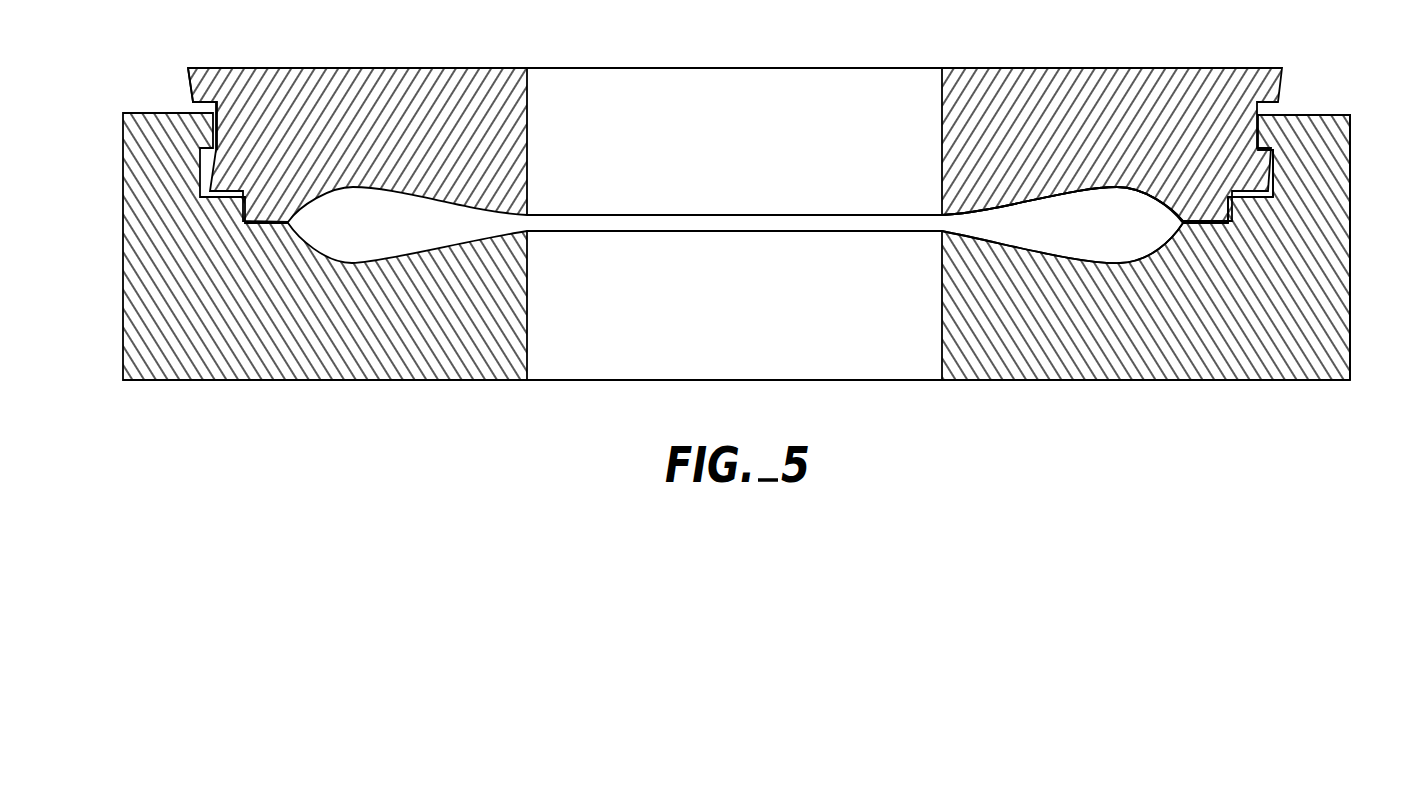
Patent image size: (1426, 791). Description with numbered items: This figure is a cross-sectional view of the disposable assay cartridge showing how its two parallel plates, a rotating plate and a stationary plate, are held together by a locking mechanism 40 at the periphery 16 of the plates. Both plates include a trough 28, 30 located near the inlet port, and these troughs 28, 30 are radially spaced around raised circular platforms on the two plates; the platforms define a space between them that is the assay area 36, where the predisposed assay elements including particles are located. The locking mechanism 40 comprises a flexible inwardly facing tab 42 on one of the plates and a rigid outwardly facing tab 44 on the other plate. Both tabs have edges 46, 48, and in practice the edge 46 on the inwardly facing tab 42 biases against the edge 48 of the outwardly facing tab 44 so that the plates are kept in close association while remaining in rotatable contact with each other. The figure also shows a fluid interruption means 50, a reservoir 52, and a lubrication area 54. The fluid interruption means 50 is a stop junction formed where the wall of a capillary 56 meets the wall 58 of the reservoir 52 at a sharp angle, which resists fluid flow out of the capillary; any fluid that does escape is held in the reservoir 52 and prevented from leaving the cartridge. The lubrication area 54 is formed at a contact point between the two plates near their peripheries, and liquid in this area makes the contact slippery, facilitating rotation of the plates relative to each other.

The periphery 16 is at (1343, 115).
The trough 28 is at (1127, 243).
The trough 30 is at (1067, 212).
The assay area 36 is at (835, 225).
The locking mechanism 40 is at (1287, 125).
The flexible inwardly facing tab 42 is at (135, 168).
The rigid outwardly facing tab 44 is at (232, 75).
The edge 46 is at (138, 113).
The edge 48 is at (195, 105).
The fluid interruption means 50 is at (1258, 203).
The reservoir 52 is at (1270, 155).
The lubrication area 54 is at (1227, 230).
The capillary 56 is at (1240, 194).
The wall 58 is at (1262, 184).